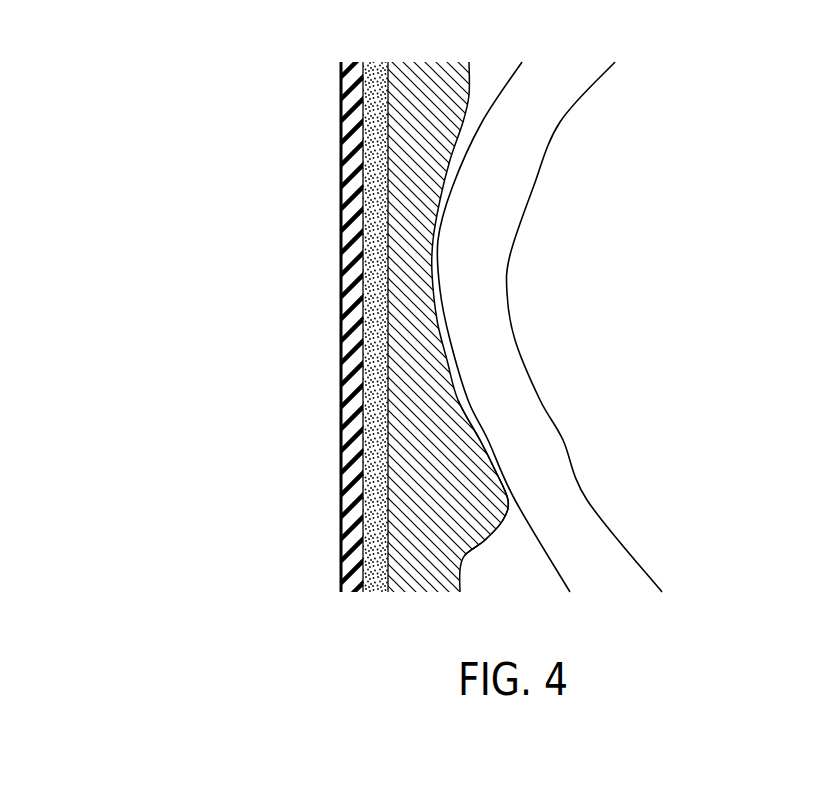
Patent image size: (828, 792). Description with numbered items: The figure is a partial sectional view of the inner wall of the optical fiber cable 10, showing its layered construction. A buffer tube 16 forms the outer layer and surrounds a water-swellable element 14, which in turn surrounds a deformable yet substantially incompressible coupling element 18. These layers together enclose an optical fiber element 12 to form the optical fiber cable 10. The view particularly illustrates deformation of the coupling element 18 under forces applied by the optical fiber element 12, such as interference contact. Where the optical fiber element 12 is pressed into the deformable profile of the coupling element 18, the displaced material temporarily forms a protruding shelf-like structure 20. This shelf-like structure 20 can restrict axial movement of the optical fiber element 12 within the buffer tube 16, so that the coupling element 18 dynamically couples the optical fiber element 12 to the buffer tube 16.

The optical fiber cable 10 is at (392, 327).
The optical fiber element 12 is at (520, 177).
The water-swellable element 14 is at (372, 257).
The buffer tube 16 is at (348, 165).
The coupling element 18 is at (408, 347).
The protruding shelf-like structure 20 is at (487, 495).